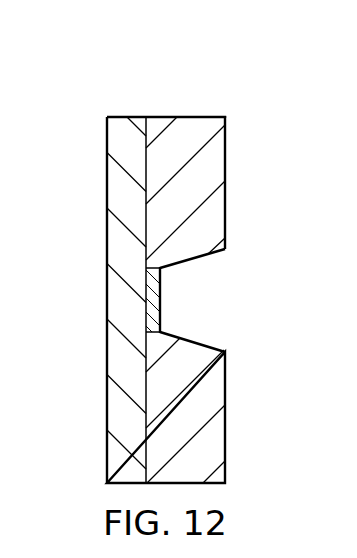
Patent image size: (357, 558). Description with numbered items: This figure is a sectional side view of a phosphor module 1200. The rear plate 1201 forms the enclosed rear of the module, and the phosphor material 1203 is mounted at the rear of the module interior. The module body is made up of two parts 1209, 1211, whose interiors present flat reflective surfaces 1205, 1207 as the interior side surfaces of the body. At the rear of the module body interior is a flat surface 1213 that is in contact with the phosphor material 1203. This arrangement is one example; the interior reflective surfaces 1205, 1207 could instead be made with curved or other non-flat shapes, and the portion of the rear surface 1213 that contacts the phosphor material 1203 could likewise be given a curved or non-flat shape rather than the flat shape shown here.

The module 1200 is at (114, 71).
The rear plate 1201 is at (117, 412).
The phosphor material 1203 is at (149, 301).
The reflective surface 1205 is at (197, 258).
The reflective surface 1207 is at (197, 345).
The module body part 1209 is at (215, 163).
The module body part 1211 is at (215, 437).
The flat rear surface 1213 is at (146, 292).